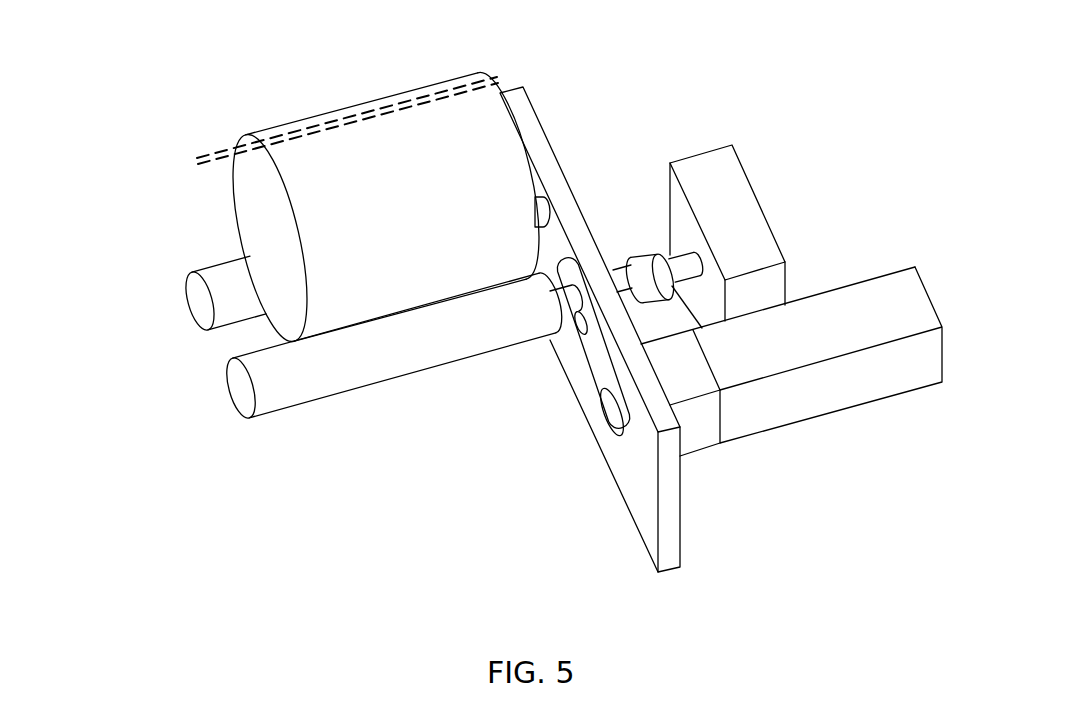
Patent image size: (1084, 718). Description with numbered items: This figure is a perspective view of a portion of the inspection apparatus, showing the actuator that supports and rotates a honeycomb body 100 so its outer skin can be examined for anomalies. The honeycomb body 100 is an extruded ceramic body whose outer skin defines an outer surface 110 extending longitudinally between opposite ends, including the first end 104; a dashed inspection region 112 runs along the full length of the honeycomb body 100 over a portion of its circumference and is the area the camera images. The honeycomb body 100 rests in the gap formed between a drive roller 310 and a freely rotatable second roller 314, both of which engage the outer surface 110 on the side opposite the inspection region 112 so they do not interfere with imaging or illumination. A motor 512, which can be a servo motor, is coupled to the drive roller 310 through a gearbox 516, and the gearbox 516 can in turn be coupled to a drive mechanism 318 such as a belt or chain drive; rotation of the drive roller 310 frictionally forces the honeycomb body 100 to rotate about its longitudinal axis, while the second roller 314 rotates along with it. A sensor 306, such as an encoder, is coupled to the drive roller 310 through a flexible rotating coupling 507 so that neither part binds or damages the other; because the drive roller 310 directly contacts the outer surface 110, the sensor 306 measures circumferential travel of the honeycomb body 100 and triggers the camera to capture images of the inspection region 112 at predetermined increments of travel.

The honeycomb body 100 is at (172, 230).
The first end 104 is at (248, 211).
The outer surface 110 is at (422, 211).
The inspection region 112 is at (220, 152).
The sensor 306 is at (734, 184).
The drive roller 310 is at (243, 388).
The second roller 314 is at (203, 300).
The drive mechanism 318 is at (584, 363).
The flexible rotating coupling 507 is at (650, 262).
The motor 512 is at (849, 392).
The gearbox 516 is at (700, 427).